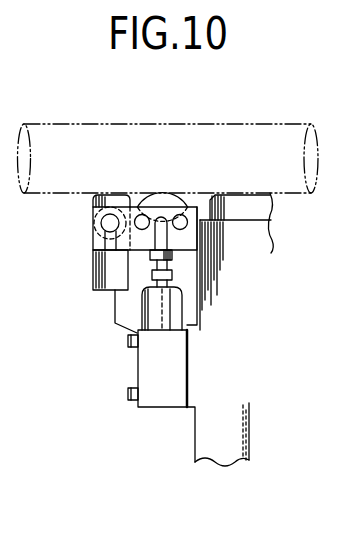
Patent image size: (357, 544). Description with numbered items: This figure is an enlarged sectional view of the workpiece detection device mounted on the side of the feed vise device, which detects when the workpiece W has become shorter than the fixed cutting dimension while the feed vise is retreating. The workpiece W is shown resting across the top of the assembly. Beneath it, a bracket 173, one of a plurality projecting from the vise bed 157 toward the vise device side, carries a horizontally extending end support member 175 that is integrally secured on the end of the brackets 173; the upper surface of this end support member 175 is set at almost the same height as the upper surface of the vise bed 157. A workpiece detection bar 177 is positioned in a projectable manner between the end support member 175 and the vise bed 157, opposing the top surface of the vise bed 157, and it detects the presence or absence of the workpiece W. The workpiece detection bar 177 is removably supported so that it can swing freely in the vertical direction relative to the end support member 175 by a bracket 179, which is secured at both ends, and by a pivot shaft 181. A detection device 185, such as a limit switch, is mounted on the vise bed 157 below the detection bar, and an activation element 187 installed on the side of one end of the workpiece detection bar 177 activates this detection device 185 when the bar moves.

The workpiece W is at (270, 130).
The vise bed 157 is at (207, 436).
The bracket 173 is at (127, 310).
The end support member 175 is at (102, 270).
The workpiece detection bar 177 is at (165, 194).
The bracket 179 is at (130, 206).
The pivot shaft 181 is at (108, 222).
The detection device 185 is at (152, 363).
The activation element 187 is at (170, 263).